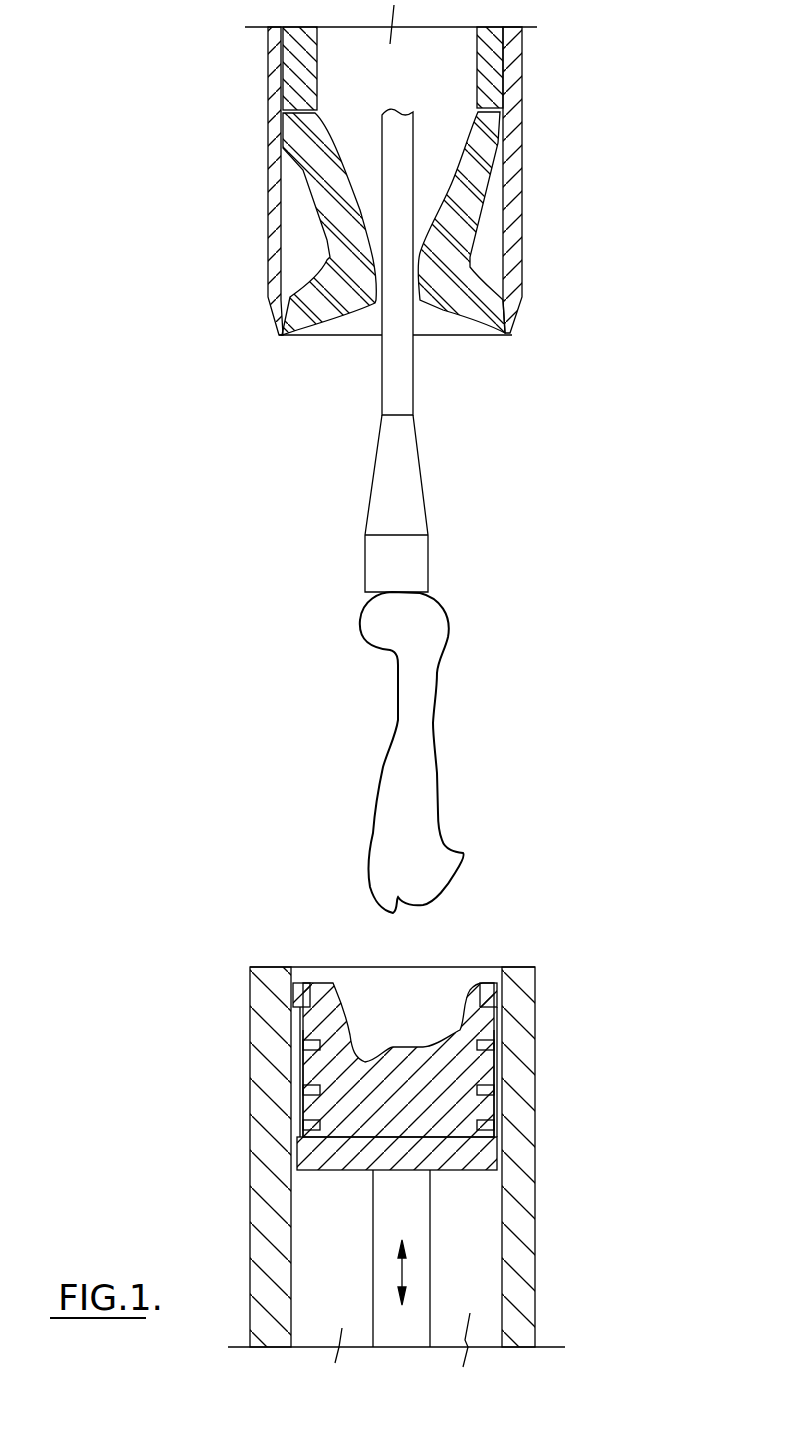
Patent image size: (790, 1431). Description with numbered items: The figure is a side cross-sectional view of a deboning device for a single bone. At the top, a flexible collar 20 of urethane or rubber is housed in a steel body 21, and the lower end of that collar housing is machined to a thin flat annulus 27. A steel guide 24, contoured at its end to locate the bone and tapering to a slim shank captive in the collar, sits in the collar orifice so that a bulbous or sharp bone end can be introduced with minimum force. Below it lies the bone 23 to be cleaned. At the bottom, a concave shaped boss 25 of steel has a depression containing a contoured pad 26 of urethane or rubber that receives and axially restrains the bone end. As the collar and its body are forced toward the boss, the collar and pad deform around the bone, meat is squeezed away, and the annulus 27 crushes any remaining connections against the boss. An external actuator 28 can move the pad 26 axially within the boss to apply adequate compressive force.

The collar 20 is at (460, 205).
The body 21 is at (515, 258).
The thin flat annulus 27 is at (507, 333).
The steel guide 24 is at (415, 515).
The bone 23 is at (423, 670).
The concave shaped boss 25 is at (527, 998).
The contoured pad 26 is at (477, 1105).
The external actuator 28 is at (443, 1297).